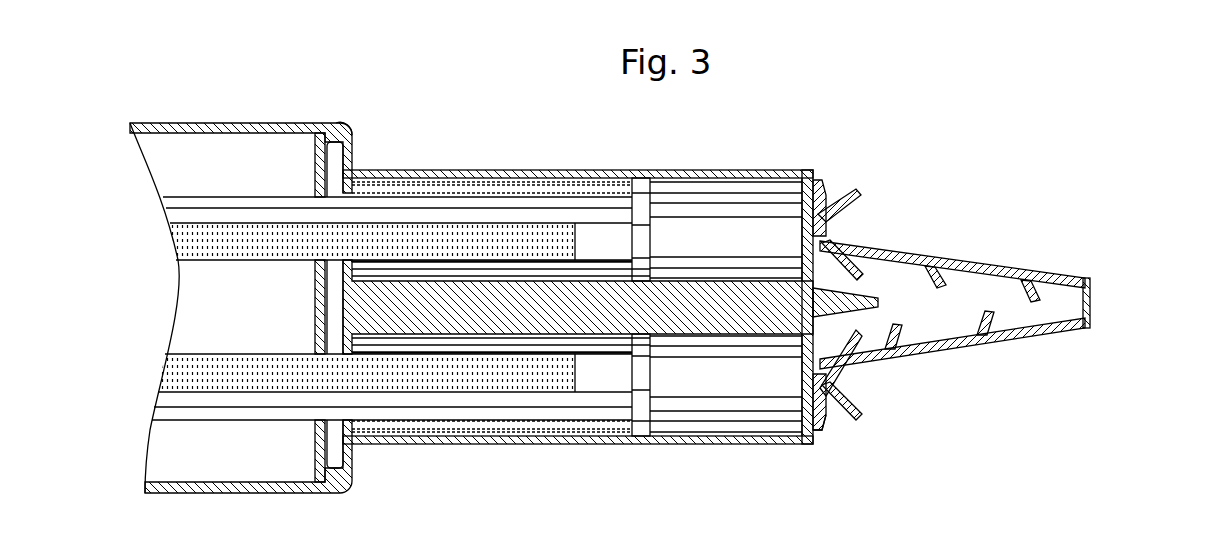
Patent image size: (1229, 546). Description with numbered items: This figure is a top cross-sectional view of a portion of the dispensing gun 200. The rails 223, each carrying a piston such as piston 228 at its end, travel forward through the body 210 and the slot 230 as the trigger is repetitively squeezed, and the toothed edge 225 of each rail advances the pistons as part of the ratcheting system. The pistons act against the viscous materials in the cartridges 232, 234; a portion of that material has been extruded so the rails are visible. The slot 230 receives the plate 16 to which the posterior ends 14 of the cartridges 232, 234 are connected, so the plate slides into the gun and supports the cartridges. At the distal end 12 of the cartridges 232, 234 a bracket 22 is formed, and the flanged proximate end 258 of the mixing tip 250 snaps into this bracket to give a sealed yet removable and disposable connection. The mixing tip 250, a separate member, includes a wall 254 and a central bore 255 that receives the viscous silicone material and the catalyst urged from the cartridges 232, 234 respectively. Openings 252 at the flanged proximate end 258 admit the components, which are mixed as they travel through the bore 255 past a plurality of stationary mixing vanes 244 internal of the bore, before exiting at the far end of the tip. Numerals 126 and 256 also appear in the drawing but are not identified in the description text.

The distal end 12 is at (820, 415).
The posterior end 14 is at (370, 170).
The plate 16 is at (330, 122).
The bracket 22 is at (838, 200).
The lower plug 126 is at (637, 440).
The dispensing gun 200 is at (585, 90).
The body 210 is at (240, 485).
The rail 223 is at (487, 222).
The toothed edge 225 is at (505, 258).
The piston 228 is at (640, 214).
The slot 230 is at (330, 470).
The cartridge 232 is at (750, 398).
The cartridge 234 is at (757, 214).
The mixing vane 244 is at (955, 274).
The mixing tip 250 is at (1007, 273).
The opening 252 is at (832, 250).
The wall 254 is at (1050, 275).
The central bore 255 is at (955, 315).
The nozzle tip 256 is at (1092, 304).
The flanged proximate end 258 is at (829, 200).